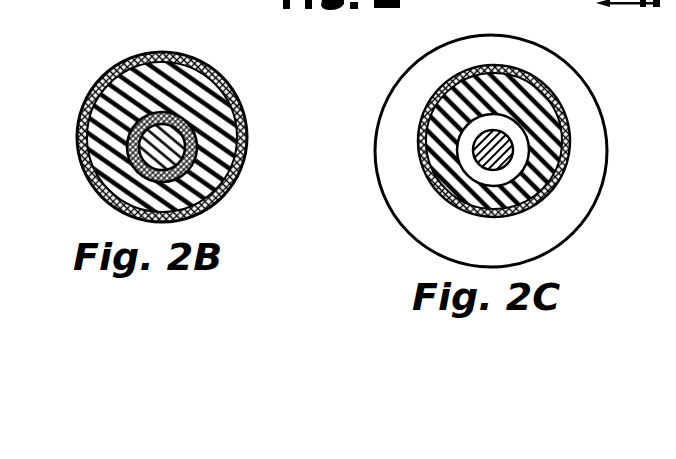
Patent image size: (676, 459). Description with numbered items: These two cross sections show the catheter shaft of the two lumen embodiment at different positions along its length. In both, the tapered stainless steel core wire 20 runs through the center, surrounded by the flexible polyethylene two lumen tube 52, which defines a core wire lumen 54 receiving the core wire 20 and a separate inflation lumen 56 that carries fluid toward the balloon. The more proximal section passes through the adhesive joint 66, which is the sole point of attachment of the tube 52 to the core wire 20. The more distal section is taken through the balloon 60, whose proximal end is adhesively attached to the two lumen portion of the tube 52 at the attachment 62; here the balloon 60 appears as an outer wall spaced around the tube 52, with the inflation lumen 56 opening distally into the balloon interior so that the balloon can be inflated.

In FIG. 2B, the core wire 20 is at (78, 158).
In FIG. 2C, the core wire 20 is at (501, 165).
In FIG. 2B, the two lumen tube 52 is at (246, 152).
In FIG. 2C, the two lumen tube 52 is at (423, 155).
In FIG. 2C, the core wire lumen 54 is at (565, 158).
In FIG. 2B, the inflation lumen 56 is at (182, 88).
In FIG. 2C, the inflation lumen 56 is at (512, 92).
In FIG. 2C, the balloon 60 is at (592, 118).
In FIG. 2C, the proximal adhesive attachment of balloon 62 is at (557, 192).
In FIG. 2B, the adhesive attachment of tube to core wire 66 is at (233, 95).